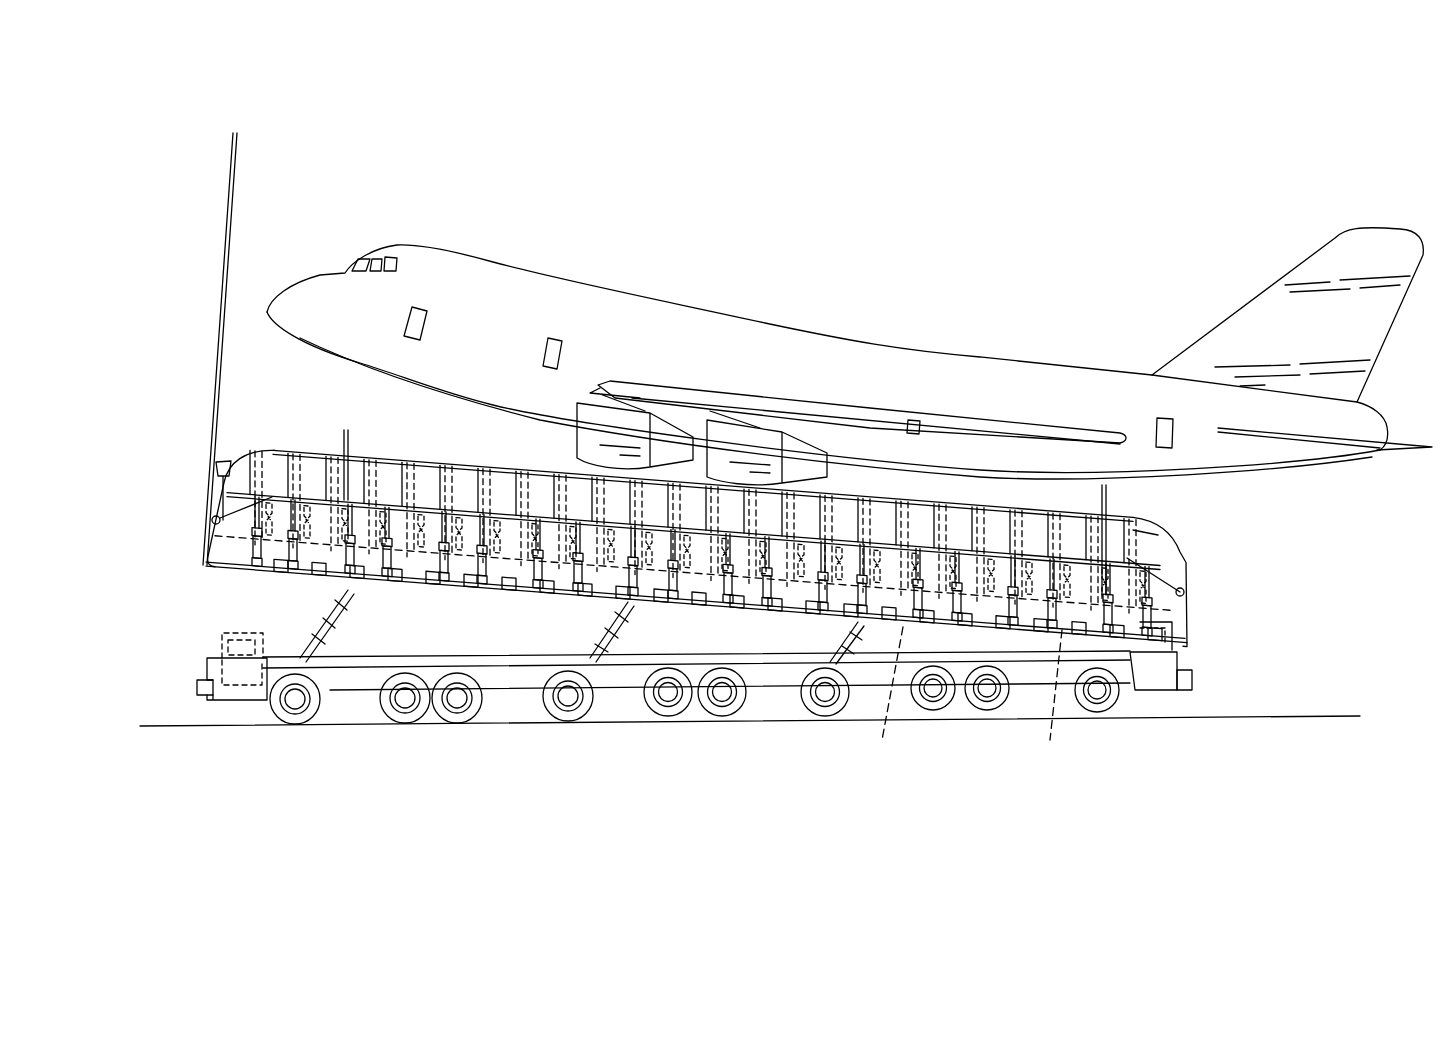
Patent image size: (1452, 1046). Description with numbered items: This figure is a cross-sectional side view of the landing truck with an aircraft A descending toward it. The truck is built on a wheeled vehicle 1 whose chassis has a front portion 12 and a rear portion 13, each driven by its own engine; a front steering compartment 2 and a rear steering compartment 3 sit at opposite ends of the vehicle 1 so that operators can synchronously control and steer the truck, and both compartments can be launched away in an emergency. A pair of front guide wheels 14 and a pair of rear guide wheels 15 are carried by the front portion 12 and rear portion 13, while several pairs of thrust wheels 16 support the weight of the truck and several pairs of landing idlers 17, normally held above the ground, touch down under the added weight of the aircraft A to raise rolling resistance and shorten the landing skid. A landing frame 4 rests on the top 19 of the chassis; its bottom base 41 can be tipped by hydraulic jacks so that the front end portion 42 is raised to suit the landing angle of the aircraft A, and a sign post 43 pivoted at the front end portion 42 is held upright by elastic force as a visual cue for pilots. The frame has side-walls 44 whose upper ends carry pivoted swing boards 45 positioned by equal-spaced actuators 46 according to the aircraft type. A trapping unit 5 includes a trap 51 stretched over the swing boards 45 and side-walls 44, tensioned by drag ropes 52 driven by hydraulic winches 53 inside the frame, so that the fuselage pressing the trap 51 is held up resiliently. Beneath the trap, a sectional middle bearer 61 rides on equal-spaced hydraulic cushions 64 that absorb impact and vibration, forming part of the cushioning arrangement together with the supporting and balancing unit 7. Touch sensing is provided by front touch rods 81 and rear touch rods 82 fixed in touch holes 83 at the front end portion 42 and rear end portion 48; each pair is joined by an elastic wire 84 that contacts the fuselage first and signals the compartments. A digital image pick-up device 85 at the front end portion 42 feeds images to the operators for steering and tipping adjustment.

The wheeled vehicle 1 is at (194, 682).
The front steering compartment 2 is at (218, 640).
The rear steering compartment 3 is at (1160, 690).
The landing frame 4 is at (228, 548).
The trapping unit 5 is at (527, 470).
The supporting and balancing unit 7 is at (330, 440).
The front portion 12 is at (222, 705).
The rear portion 13 is at (1192, 668).
The front guide wheels 14 is at (292, 725).
The rear guide wheels 15 is at (1097, 714).
The thrust wheels 16 is at (568, 722).
The landing idlers 17 is at (405, 725).
The top of the chassis 19 is at (430, 656).
The bottom base 41 is at (232, 533).
The front end portion 42 is at (385, 590).
The sign post 43 is at (236, 171).
The side-walls 44 is at (318, 584).
The swing boards 45 is at (233, 447).
The actuators 46 is at (1125, 513).
The rear end portion 48 is at (1188, 572).
The trap 51 is at (975, 500).
The drag ropes 52 is at (1158, 538).
The hydraulic winches 53 is at (897, 698).
The middle bearer 61 is at (575, 600).
The hydraulic cushions 64 is at (685, 602).
The front touch rods 81 is at (347, 455).
The rear touch rods 82 is at (1077, 490).
The touch holes 83 is at (1054, 708).
The elastic wire 84 is at (347, 432).
The digital image pick-up device 85 is at (214, 466).
The aircraft A is at (764, 322).